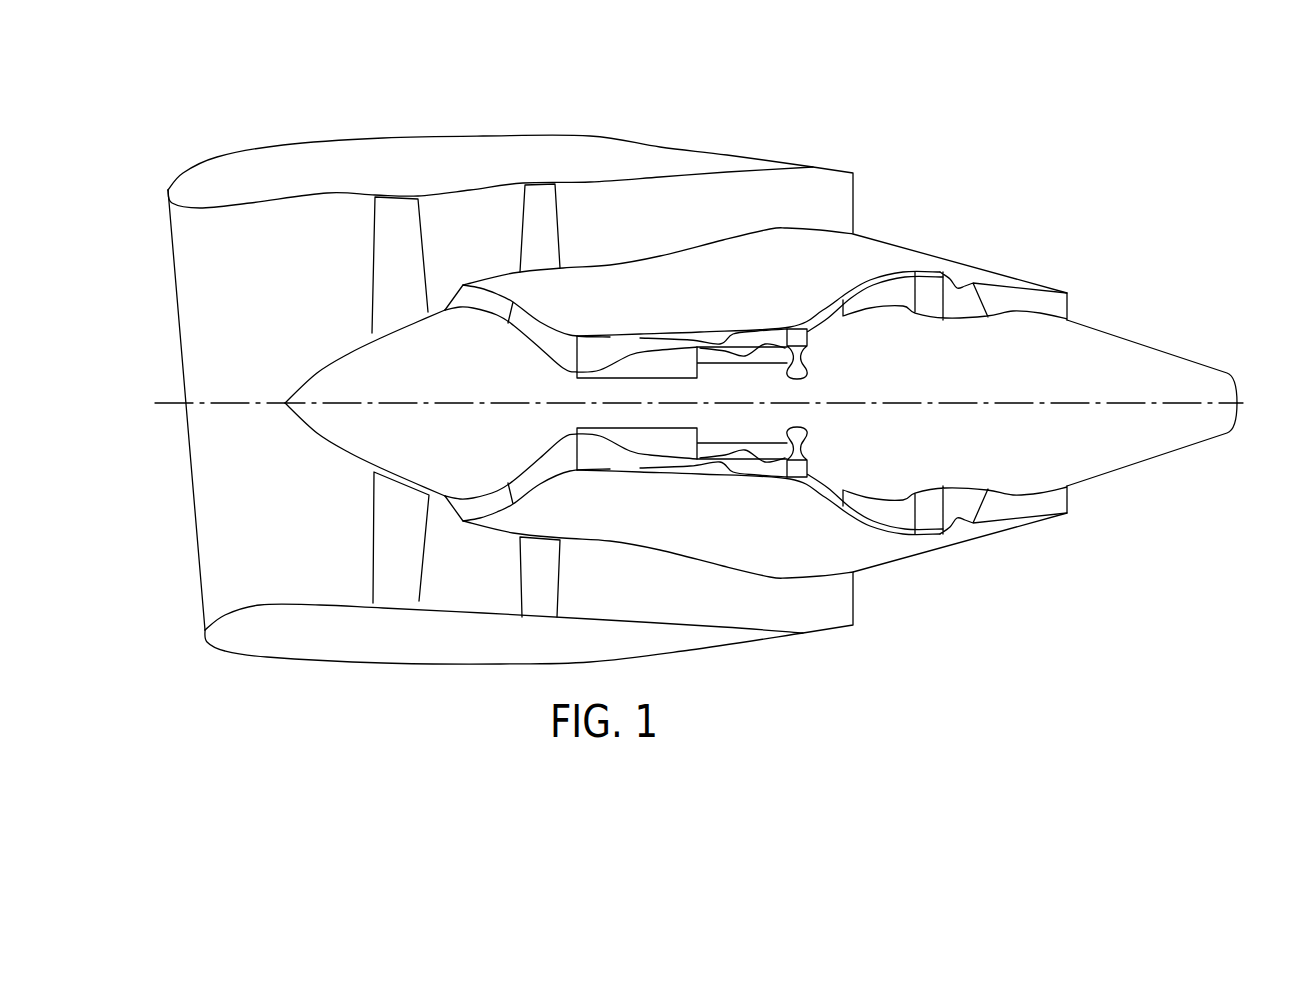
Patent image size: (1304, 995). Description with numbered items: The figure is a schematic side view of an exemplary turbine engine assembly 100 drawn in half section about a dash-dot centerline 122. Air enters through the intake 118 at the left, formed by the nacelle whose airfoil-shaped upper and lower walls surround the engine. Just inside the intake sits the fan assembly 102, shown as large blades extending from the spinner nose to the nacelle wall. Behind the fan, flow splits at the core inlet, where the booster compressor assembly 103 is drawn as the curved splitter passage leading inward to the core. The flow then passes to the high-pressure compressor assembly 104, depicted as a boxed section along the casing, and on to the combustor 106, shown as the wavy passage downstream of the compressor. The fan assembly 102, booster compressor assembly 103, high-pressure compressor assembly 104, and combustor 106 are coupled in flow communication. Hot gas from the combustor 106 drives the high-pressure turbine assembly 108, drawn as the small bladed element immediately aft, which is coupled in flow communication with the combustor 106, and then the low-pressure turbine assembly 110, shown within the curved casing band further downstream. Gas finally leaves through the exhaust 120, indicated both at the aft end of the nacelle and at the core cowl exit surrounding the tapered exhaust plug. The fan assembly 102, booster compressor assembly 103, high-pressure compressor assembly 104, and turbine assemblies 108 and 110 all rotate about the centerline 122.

The turbine engine assembly 100 is at (712, 110).
The fan assembly 102 is at (364, 546).
The booster compressor assembly 103 is at (495, 302).
The high-pressure compressor assembly 104 is at (605, 336).
The combustor 106 is at (770, 340).
The high-pressure turbine assembly 108 is at (798, 333).
The low-pressure turbine assembly 110 is at (893, 288).
The intake 118 is at (154, 237).
The exhaust 120 is at (885, 187).
The centerline 122 is at (1183, 400).